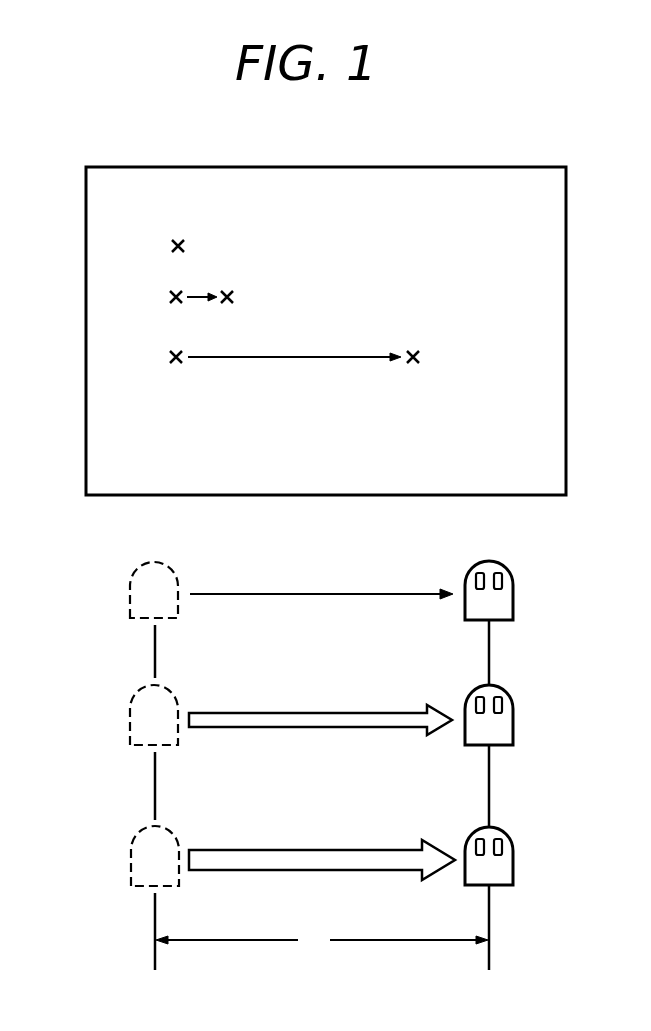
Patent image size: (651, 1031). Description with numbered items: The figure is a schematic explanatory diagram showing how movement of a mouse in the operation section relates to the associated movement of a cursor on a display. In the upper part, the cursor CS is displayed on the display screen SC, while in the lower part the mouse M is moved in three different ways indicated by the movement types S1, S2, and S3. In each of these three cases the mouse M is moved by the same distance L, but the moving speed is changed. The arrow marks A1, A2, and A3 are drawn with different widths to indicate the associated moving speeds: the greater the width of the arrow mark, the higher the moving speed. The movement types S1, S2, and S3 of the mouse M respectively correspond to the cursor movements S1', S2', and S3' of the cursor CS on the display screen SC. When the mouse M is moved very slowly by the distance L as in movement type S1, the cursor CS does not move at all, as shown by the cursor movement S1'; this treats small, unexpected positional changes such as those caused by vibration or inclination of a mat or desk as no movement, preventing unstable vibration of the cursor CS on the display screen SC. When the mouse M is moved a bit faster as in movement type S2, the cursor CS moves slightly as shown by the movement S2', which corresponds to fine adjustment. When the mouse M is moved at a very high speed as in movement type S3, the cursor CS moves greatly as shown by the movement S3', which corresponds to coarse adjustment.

The display screen SC is at (508, 167).
The cursor CS is at (177, 236).
The cursor movement S1' is at (55, 248).
The cursor movement S2' is at (135, 300).
The cursor movement S3' is at (228, 361).
The movement type S1 is at (132, 620).
The movement type S2 is at (132, 752).
The movement type S3 is at (132, 898).
The arrow mark A1 is at (315, 593).
The arrow mark A2 is at (316, 712).
The arrow mark A3 is at (316, 848).
The mouse M is at (503, 765).
The distance L is at (322, 941).